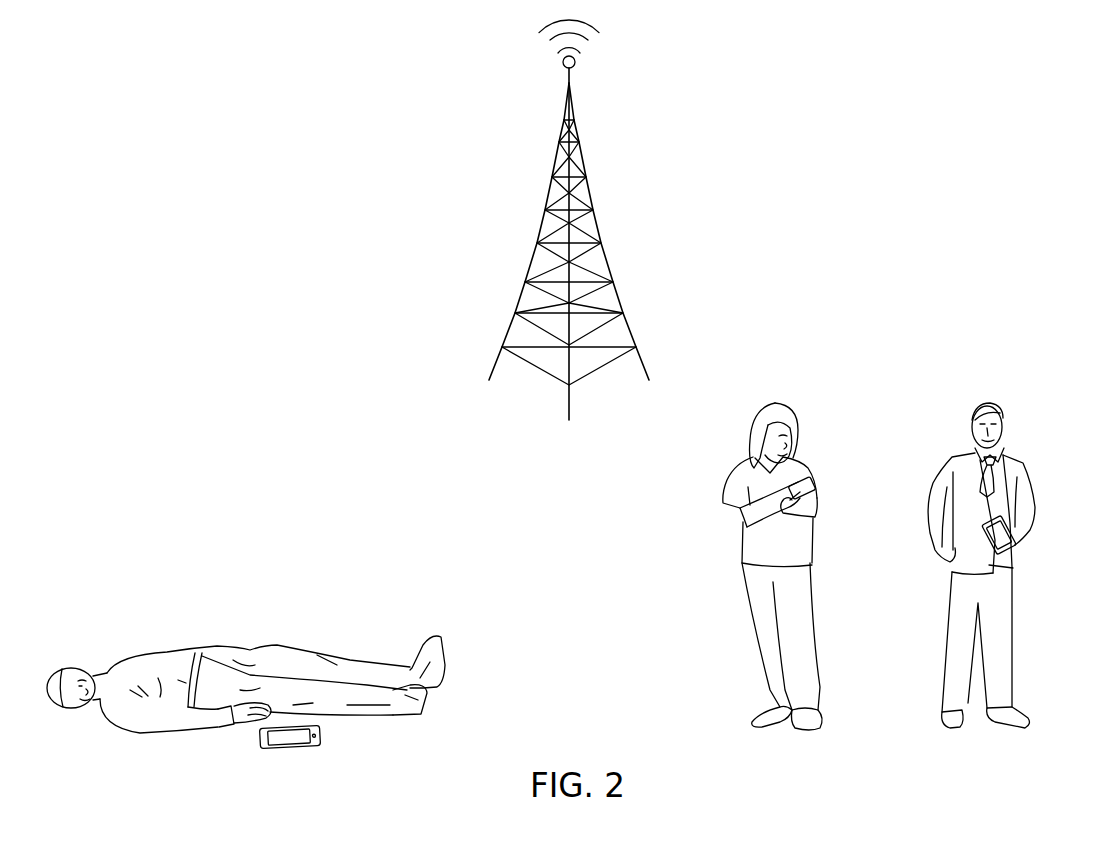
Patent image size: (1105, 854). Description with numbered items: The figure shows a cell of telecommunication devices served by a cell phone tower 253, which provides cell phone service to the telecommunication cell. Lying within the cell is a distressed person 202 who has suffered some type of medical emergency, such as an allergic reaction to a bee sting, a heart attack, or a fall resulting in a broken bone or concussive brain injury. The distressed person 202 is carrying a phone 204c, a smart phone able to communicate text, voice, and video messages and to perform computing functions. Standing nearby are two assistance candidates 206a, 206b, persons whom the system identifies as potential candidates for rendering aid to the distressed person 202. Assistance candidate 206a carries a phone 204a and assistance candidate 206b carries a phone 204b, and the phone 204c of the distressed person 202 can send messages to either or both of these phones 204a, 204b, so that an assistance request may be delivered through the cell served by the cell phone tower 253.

The distressed person 202 is at (178, 652).
The phone 204a is at (813, 485).
The phone 204b is at (1015, 552).
The phone 204c is at (258, 740).
The assistance candidate 206a is at (740, 560).
The assistance candidate 206b is at (948, 607).
The cell phone tower 253 is at (528, 268).